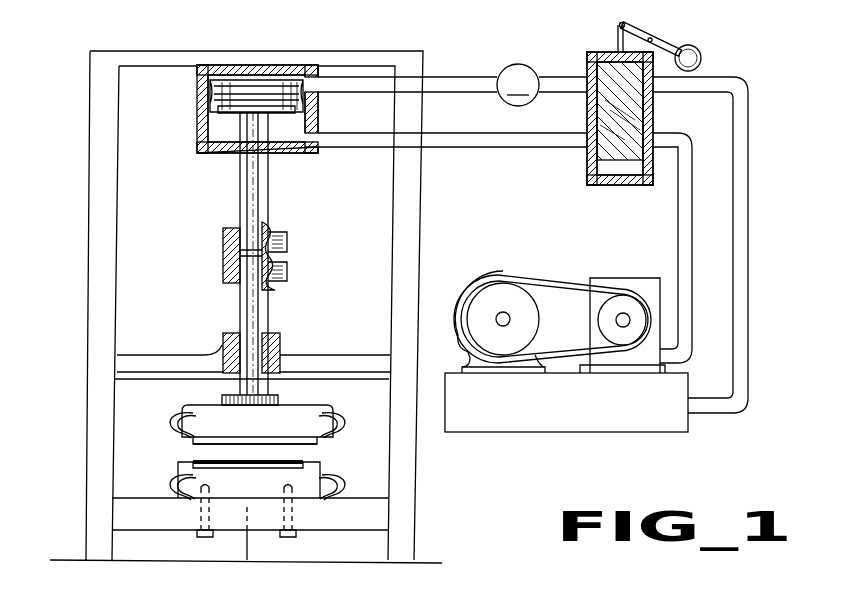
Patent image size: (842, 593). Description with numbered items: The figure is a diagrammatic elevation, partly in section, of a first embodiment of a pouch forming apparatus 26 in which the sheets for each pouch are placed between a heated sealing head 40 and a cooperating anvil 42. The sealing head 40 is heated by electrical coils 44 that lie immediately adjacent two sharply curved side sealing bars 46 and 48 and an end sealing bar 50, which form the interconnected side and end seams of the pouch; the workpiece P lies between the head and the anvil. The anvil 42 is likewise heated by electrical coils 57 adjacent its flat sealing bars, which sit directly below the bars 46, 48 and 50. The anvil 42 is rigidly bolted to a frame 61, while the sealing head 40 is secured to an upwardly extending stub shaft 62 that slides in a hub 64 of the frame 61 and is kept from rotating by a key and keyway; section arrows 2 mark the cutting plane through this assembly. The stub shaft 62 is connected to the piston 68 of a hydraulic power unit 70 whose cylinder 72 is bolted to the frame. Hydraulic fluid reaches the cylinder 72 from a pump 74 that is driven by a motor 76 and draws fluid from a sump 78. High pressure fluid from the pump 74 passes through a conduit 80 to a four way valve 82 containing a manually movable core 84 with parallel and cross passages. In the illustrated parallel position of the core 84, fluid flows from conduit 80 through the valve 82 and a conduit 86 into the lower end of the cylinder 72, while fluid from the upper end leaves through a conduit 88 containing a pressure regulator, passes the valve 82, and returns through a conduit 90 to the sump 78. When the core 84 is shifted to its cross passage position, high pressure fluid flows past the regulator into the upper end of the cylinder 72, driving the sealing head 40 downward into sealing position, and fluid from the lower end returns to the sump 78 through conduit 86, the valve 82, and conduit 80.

The pouch forming apparatus 26 is at (437, 44).
The hydraulic power unit 70 is at (197, 72).
The piston 68 is at (212, 92).
The cylinder 72 is at (197, 128).
The stub shaft 62 is at (268, 300).
The hub 64 is at (281, 338).
The section line 2- 2 is at (240, 385).
The sealing head 40 is at (316, 410).
The electrical coils 44 is at (178, 413).
The side sealing bar 46 is at (188, 441).
The side sealing bar 48 is at (320, 445).
The end sealing bar 50 is at (280, 443).
The workpiece P is at (192, 460).
The anvil 42 is at (320, 468).
The electrical coils 57 is at (178, 479).
The frame 61 is at (412, 462).
The conduit 88 is at (438, 85).
The conduit 86 is at (462, 141).
The four way valve 82 is at (587, 162).
The core 84 is at (648, 112).
The conduit 80 is at (678, 230).
The conduit 90 is at (749, 232).
The motor 76 is at (490, 272).
The pump 74 is at (622, 278).
The sump 78 is at (580, 407).